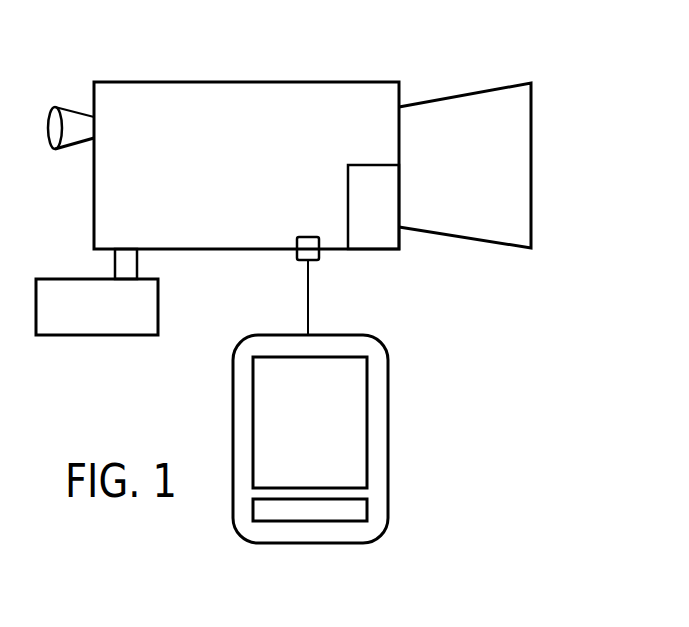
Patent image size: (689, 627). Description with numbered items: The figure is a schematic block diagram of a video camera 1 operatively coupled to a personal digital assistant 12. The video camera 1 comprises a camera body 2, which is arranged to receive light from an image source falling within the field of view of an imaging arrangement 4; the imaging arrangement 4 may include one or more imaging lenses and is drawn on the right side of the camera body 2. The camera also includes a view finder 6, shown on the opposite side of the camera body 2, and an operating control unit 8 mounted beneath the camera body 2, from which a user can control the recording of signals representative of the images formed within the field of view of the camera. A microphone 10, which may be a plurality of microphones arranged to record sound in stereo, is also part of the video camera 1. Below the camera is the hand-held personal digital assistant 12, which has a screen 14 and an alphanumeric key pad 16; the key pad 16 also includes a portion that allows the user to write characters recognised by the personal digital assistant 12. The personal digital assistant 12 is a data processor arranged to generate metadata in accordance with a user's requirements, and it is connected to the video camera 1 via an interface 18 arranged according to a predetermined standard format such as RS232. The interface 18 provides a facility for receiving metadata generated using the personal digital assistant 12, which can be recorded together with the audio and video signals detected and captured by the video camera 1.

The video camera 1 is at (329, 58).
The camera body 2 is at (118, 90).
The imaging arrangement 4 is at (531, 102).
The view finder 6 is at (68, 138).
The operating control unit 8 is at (67, 324).
The microphone 10 is at (382, 246).
The personal digital assistant 12 is at (388, 384).
The screen 14 is at (256, 384).
The alphanumeric key pad 16 is at (365, 512).
The interface 18 is at (304, 256).